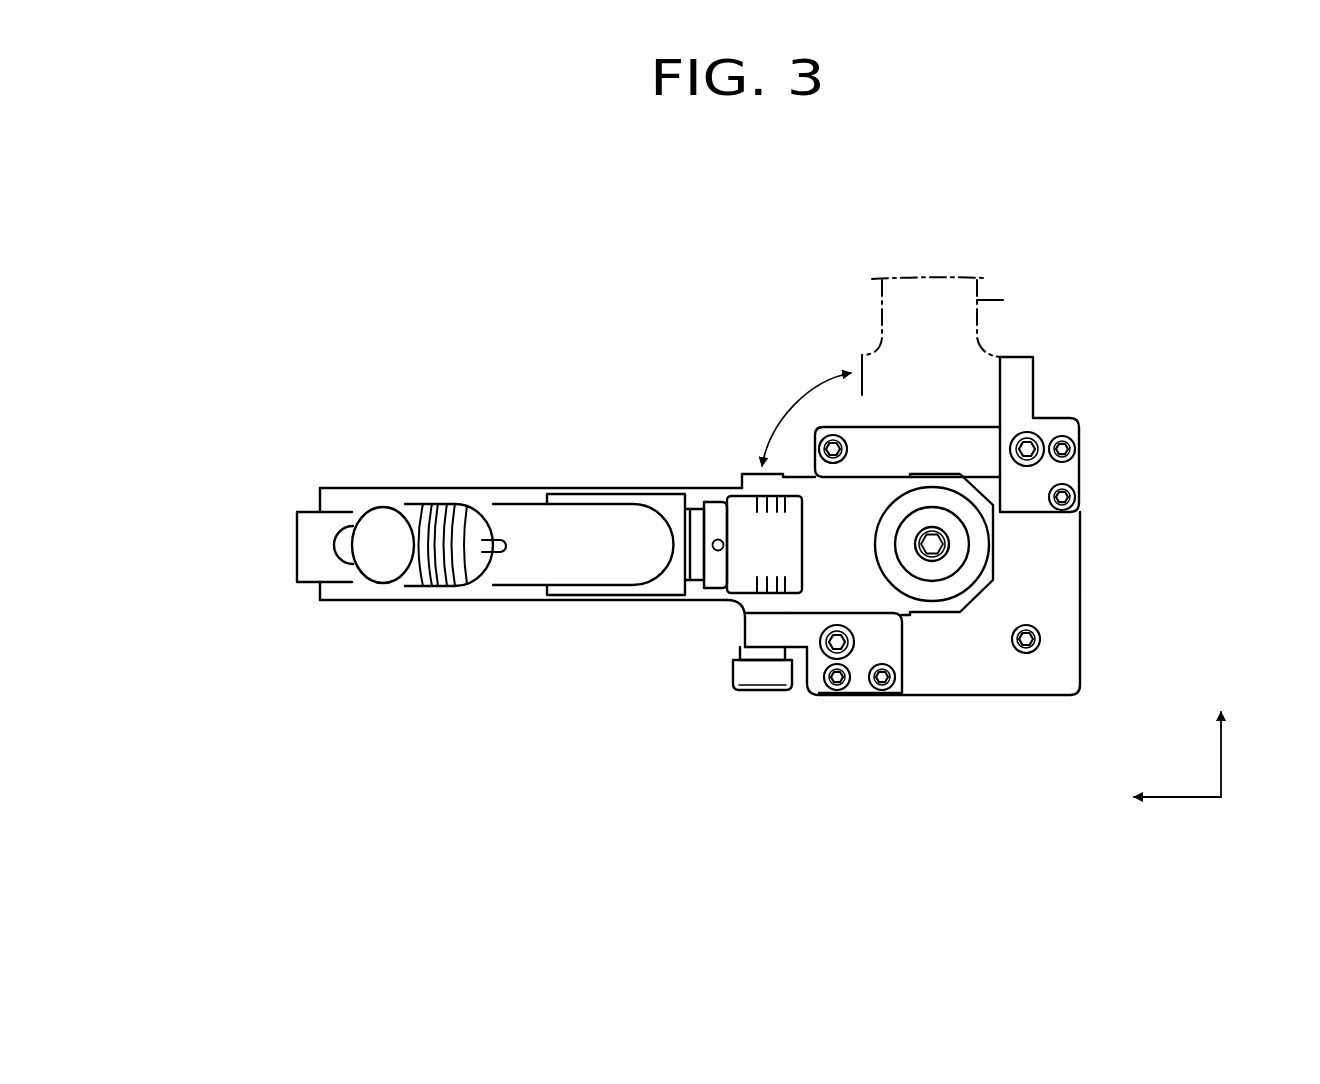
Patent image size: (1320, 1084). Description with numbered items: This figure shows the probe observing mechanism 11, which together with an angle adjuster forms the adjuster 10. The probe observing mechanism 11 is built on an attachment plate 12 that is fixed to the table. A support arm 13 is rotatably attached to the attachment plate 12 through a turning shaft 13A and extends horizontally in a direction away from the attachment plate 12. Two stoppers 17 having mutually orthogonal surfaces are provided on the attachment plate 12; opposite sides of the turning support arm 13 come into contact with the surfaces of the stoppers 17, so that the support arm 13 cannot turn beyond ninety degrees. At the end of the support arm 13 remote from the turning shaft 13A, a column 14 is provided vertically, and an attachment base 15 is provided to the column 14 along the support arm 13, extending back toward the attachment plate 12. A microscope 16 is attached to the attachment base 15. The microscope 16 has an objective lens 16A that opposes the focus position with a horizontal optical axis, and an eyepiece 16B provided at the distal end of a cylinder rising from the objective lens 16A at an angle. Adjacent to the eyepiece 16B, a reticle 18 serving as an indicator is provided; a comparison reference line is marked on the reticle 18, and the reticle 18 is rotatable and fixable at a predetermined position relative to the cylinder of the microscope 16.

The adjuster 10 is at (628, 428).
The probe observing mechanism 11 is at (622, 590).
The attachment plate 12 is at (1052, 595).
The support arm 13 is at (355, 602).
The turning shaft 13A is at (940, 565).
The column 14 is at (333, 540).
The attachment base 15 is at (303, 568).
The microscope 16 is at (525, 525).
The objective lens 16A is at (742, 515).
The eyepiece 16B is at (417, 513).
The stoppers 17 is at (1065, 472).
The reticle 18 is at (473, 570).